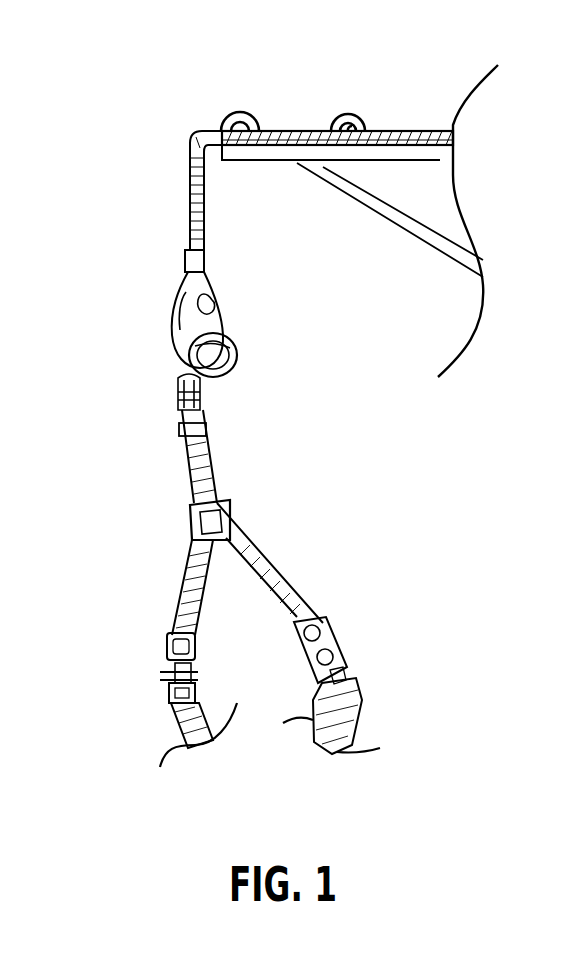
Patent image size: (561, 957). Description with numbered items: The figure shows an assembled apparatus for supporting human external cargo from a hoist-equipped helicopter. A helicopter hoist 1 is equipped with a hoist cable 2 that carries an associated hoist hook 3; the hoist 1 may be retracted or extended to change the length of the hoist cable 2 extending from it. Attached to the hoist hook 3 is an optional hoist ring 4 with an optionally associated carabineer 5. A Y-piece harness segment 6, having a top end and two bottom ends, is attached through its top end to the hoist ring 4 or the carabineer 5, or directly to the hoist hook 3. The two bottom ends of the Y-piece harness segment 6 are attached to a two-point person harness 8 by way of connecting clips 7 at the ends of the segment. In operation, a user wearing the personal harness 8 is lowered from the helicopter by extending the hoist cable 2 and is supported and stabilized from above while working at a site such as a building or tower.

The helicopter hoist 1 is at (268, 160).
The hoist cable 2 is at (385, 130).
The hoist hook 3 is at (173, 312).
The hoist ring 4 is at (236, 366).
The carabineer 5 is at (204, 400).
The Y-piece harness segment 6 is at (250, 533).
The clip 7 is at (342, 632).
The two-point person harness 8 is at (352, 703).